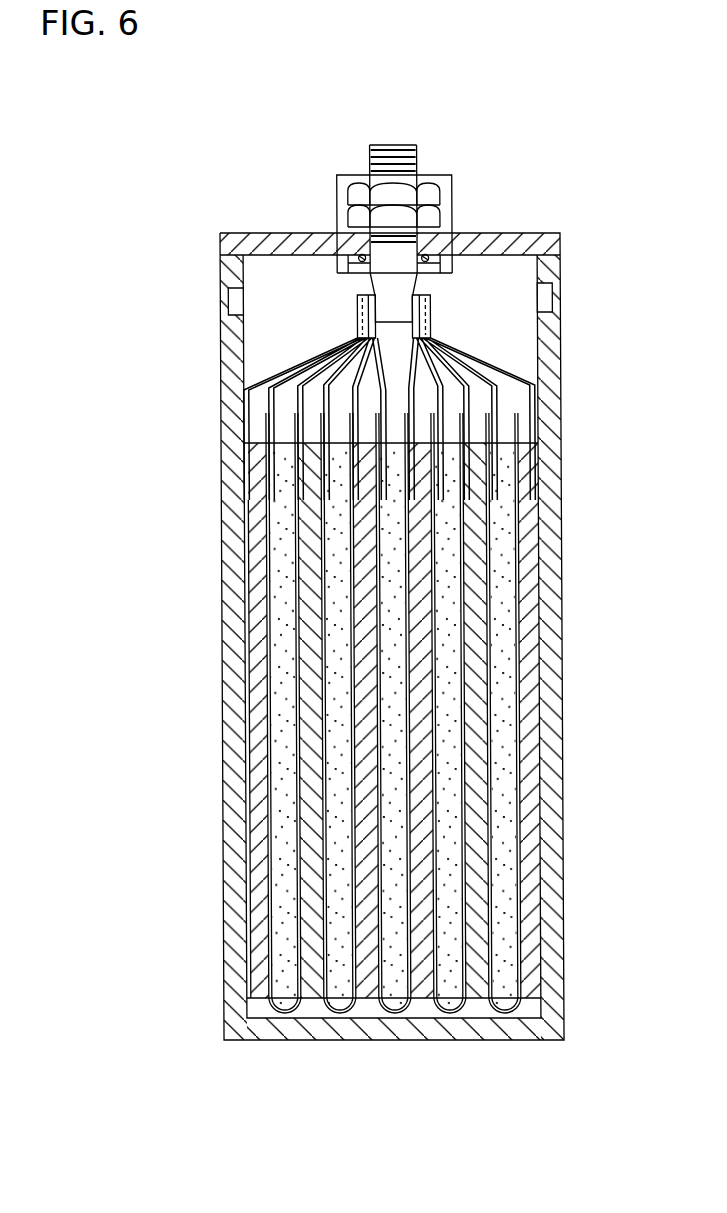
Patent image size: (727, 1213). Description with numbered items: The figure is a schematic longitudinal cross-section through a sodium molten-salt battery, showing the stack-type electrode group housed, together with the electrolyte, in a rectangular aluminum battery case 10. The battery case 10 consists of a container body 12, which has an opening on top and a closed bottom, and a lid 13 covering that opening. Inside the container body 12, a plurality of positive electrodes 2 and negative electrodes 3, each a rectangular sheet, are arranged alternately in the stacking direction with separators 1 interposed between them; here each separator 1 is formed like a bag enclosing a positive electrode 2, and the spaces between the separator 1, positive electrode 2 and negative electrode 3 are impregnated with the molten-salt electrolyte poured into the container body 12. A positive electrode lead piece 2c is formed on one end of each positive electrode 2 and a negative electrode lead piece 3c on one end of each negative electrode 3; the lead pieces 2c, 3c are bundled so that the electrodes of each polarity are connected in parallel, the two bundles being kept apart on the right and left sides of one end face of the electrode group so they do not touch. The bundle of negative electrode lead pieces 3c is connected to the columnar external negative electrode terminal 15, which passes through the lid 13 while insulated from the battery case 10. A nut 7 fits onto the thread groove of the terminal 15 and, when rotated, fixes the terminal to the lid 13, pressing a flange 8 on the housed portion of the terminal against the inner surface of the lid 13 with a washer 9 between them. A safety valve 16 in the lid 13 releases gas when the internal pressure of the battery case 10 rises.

The separator 1 is at (518, 416).
The positive electrode 2 is at (507, 627).
The positive electrode lead piece 2c is at (272, 393).
The negative electrode 3 is at (530, 548).
The negative electrode lead piece 3c is at (262, 368).
The nut 7 is at (420, 204).
The flange 8 is at (430, 262).
The washer 9 is at (465, 254).
The battery case 10 is at (371, 578).
The container body 12 is at (232, 348).
The lid 13 is at (277, 243).
The external negative electrode terminal 15 is at (414, 164).
The safety valve 16 is at (446, 190).